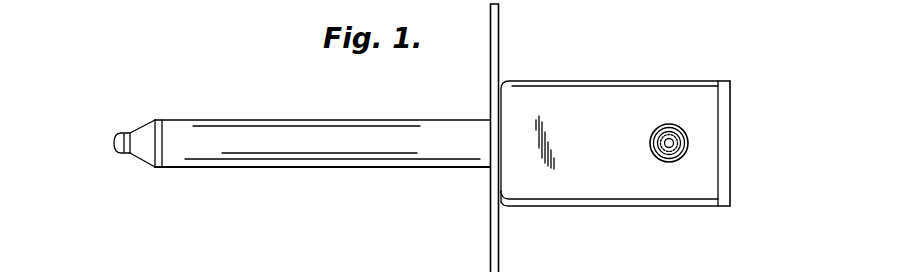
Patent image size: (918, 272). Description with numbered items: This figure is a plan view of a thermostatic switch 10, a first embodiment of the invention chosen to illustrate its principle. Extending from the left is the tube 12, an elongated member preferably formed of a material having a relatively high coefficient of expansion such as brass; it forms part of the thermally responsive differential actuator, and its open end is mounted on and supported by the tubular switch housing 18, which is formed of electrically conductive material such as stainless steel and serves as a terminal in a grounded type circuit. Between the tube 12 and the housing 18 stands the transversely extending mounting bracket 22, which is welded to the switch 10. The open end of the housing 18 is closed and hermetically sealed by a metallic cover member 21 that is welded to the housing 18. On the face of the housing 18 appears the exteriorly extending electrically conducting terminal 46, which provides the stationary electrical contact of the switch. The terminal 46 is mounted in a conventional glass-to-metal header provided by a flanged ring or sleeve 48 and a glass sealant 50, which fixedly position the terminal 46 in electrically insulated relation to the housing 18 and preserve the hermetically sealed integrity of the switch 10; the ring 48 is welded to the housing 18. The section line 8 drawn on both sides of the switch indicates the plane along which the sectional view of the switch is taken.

The section line 8- 8 is at (53, 113).
The thermostatic switch 10 is at (709, 55).
The tube 12 is at (424, 162).
The switch housing 18 is at (649, 200).
The cover member 21 is at (723, 101).
The mounting bracket 22 is at (499, 249).
The terminal 46 is at (669, 140).
The flanged ring 48 is at (656, 145).
The glass sealant 50 is at (669, 148).